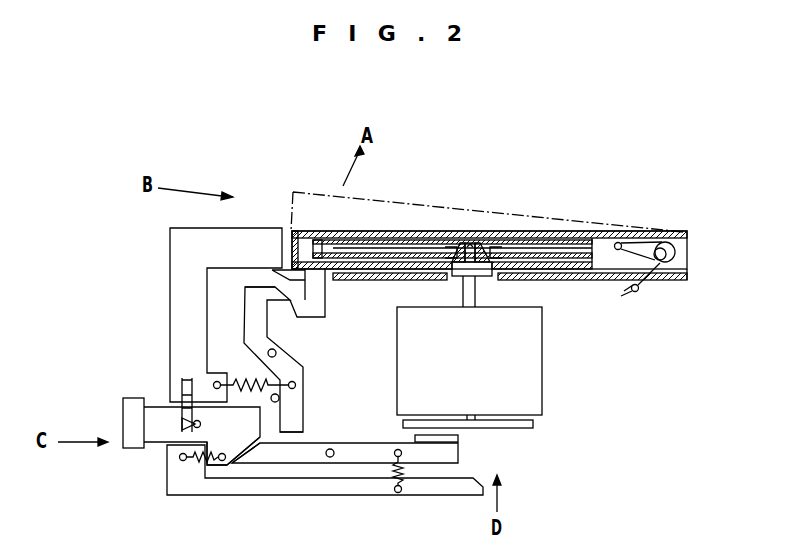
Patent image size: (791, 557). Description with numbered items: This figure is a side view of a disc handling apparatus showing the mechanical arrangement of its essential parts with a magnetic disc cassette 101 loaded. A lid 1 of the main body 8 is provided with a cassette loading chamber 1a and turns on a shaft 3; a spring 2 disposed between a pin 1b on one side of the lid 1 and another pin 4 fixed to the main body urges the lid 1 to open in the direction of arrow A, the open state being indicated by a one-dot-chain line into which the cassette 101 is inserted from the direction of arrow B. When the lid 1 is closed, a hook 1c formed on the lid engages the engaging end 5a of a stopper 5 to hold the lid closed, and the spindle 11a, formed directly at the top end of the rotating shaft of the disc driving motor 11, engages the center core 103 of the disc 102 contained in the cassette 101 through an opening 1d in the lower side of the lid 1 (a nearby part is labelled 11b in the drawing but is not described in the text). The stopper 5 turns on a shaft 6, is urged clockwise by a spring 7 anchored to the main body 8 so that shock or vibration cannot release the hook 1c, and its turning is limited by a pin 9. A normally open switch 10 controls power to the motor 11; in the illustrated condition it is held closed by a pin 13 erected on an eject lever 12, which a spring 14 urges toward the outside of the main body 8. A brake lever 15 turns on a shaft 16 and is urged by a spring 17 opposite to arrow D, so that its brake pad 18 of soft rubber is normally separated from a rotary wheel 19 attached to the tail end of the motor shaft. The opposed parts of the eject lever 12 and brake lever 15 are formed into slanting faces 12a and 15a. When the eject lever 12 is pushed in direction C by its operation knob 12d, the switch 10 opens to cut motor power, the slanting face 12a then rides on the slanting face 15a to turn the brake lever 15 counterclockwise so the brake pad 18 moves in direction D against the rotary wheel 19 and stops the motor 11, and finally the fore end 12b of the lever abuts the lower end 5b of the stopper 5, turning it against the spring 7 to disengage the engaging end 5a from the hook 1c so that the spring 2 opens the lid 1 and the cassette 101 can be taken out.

The lid 1 is at (522, 225).
The cassette loading chamber 1a is at (290, 248).
The pin 1b is at (618, 242).
The hook 1c is at (318, 298).
The opening 1d is at (448, 284).
The spring 2 is at (640, 243).
The shaft 3 is at (668, 243).
The pin 4 is at (636, 292).
The stopper 5 is at (258, 325).
The engaging end 5a is at (250, 292).
The lower end 5b is at (300, 421).
The shaft 6 is at (282, 355).
The spring 7 is at (248, 382).
The main body 8 is at (185, 253).
The pin 9 is at (283, 400).
The switch 10 is at (184, 380).
The disc driving motor 11 is at (535, 344).
The spindle 11a is at (480, 245).
The bushing 11b is at (502, 281).
The eject lever 12 is at (160, 412).
The slanting face 12a is at (245, 453).
The fore end 12b is at (265, 425).
The operation knob 12d is at (132, 449).
The pin 13 is at (192, 434).
The spring 14 is at (192, 448).
The brake lever 15 is at (305, 456).
The slanting face 15a is at (262, 448).
The shaft 16 is at (333, 458).
The spring 17 is at (402, 473).
The brake pad 18 is at (455, 441).
The rotary wheel 19 is at (533, 424).
The magnetic disc cassette 101 is at (318, 240).
The disc 102 is at (558, 250).
The center core 103 is at (466, 243).